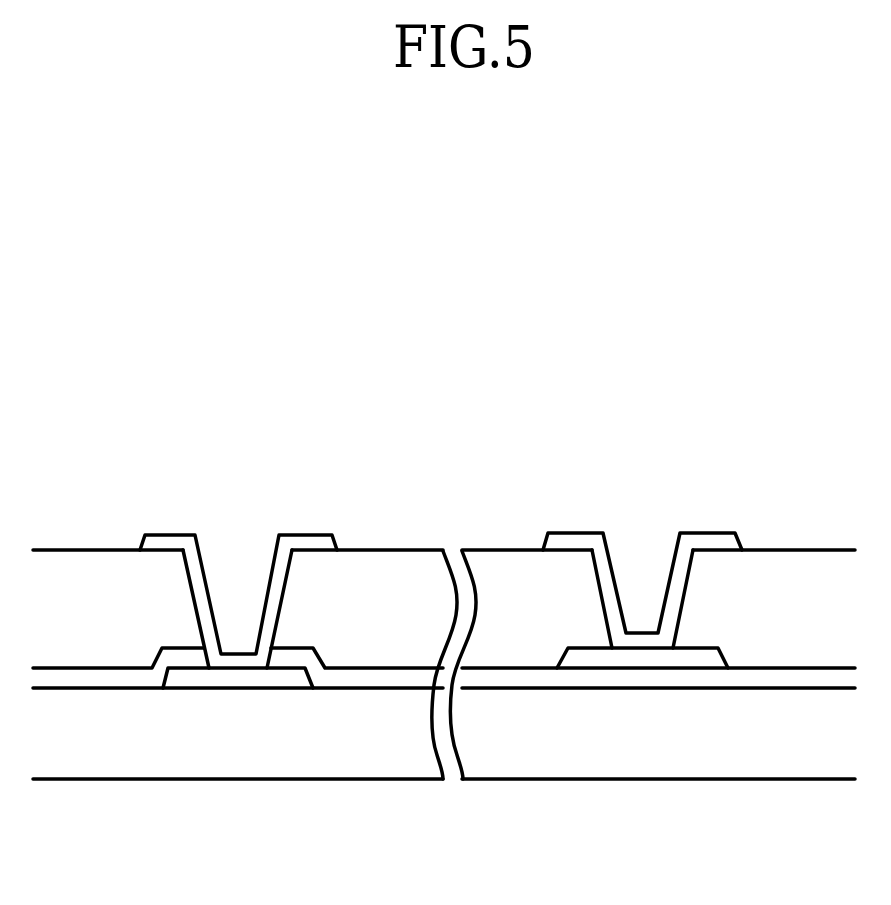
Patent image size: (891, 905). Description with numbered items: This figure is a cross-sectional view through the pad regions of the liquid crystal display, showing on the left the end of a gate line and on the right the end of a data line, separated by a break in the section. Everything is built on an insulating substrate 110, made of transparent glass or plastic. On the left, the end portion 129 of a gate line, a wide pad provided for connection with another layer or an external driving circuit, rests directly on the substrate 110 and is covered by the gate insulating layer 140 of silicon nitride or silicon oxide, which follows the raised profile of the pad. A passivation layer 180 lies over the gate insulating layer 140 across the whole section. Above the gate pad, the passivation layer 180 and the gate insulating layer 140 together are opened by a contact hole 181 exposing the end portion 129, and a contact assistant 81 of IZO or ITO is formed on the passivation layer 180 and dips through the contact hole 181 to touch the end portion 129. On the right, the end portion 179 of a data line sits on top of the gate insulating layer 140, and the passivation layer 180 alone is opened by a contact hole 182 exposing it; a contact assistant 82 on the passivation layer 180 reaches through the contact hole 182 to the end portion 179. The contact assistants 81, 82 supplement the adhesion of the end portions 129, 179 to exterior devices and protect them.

The insulating substrate 110 is at (297, 757).
The end portion of gate line 129 is at (212, 680).
The gate insulating layer 140 is at (95, 678).
The end portion of data line 179 is at (653, 660).
The passivation layer 180 is at (88, 577).
The contact hole 181 is at (190, 580).
The contact hole 182 is at (602, 580).
The contact assistant 81 is at (158, 542).
The contact assistant 82 is at (567, 540).